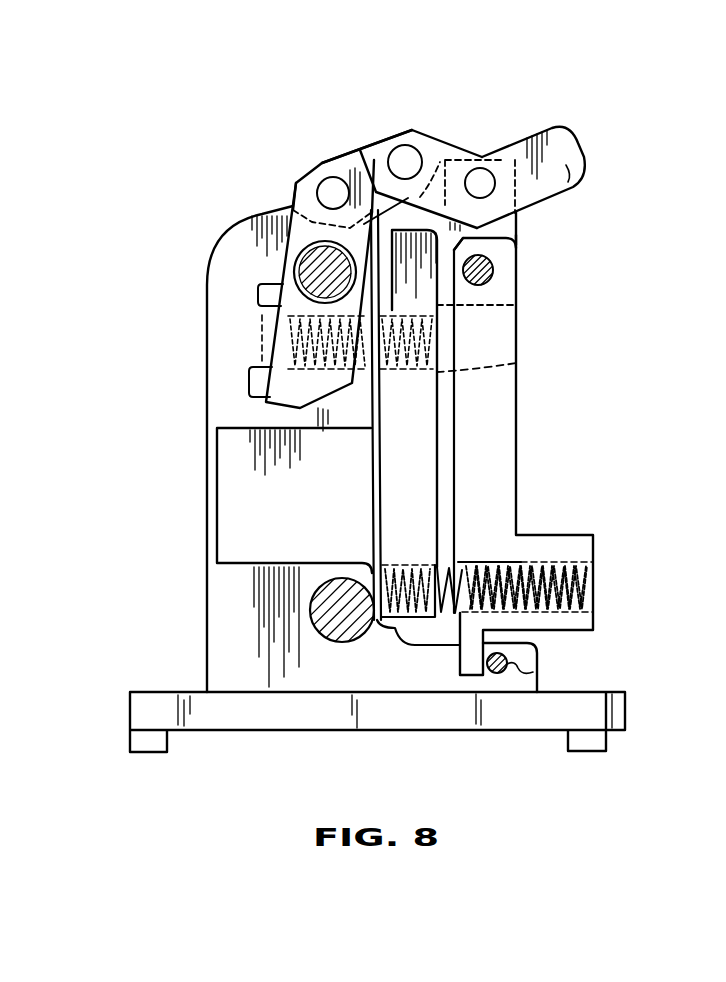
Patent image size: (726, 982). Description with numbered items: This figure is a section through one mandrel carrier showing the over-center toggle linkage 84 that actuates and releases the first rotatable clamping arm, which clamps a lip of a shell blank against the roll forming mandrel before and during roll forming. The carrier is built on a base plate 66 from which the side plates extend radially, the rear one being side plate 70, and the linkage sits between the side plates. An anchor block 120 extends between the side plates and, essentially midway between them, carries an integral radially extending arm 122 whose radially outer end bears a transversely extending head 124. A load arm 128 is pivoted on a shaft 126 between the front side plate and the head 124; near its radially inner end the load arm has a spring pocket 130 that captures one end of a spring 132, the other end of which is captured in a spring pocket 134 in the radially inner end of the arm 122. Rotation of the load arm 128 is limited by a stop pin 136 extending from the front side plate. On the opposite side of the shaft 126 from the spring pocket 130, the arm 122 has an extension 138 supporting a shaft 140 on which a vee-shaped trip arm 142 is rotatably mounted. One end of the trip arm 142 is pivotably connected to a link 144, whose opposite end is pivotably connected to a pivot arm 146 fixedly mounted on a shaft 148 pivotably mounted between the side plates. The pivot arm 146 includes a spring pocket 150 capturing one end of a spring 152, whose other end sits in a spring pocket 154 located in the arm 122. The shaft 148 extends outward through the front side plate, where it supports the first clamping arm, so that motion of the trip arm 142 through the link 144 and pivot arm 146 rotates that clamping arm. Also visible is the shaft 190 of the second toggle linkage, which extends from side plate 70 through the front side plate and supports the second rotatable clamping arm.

The base plate 66 is at (253, 715).
The side plate 70 is at (230, 345).
The over-center toggle linkage 84 is at (569, 153).
The anchor block 120 is at (222, 455).
The radially extending arm 122 is at (455, 434).
The transversely extending head 124 is at (520, 228).
The shaft 126 is at (493, 271).
The load arm 128 is at (500, 485).
The spring pocket 130 is at (544, 562).
The spring 132 is at (447, 612).
The spring pocket 134 is at (398, 565).
The stop pin 136 is at (538, 672).
The extension 138 is at (520, 240).
The shaft 140 is at (480, 183).
The vee-shaped trip arm 142 is at (583, 178).
The link 144 is at (362, 152).
The pivot arm 146 is at (290, 207).
The shaft 148 is at (298, 266).
The spring pocket 150 is at (262, 318).
The spring 152 is at (437, 414).
The spring pocket 154 is at (517, 372).
The shaft 190 is at (345, 597).